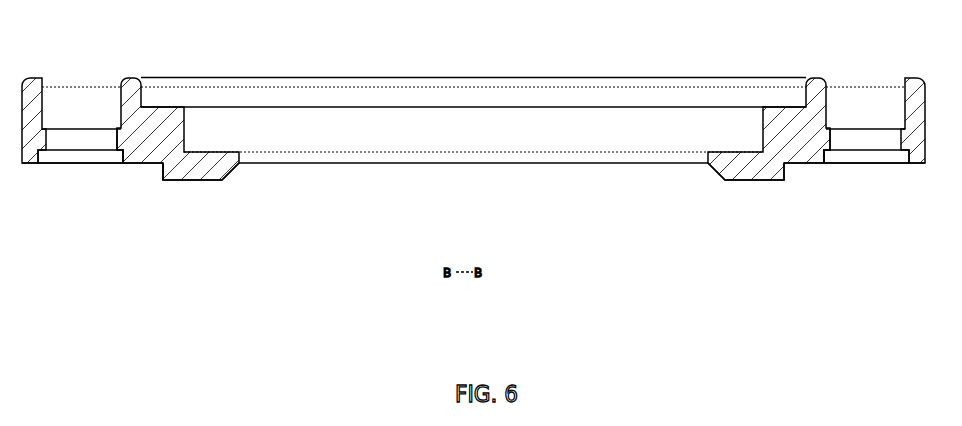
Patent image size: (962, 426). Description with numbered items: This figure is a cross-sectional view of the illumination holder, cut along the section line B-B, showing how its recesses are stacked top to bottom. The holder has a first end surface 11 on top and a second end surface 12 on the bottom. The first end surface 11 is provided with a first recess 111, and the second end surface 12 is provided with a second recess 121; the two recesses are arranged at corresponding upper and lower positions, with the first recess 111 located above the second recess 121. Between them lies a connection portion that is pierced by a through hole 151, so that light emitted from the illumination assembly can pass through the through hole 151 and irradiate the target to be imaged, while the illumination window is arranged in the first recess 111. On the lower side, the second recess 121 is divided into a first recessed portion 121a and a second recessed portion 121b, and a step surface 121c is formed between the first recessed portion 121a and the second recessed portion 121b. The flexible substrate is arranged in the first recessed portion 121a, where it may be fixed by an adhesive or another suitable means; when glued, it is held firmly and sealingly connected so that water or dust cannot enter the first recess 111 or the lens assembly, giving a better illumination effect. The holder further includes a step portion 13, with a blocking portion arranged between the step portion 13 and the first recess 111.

The first end surface 11 is at (815, 82).
The first recess 111 is at (78, 103).
The second end surface 12 is at (757, 181).
The second recess 121 is at (65, 163).
The first recessed portion 121a is at (122, 153).
The second recessed portion 121b is at (160, 175).
The step surface 121c is at (140, 164).
The step portion 13 is at (192, 107).
The through hole 151 is at (80, 140).